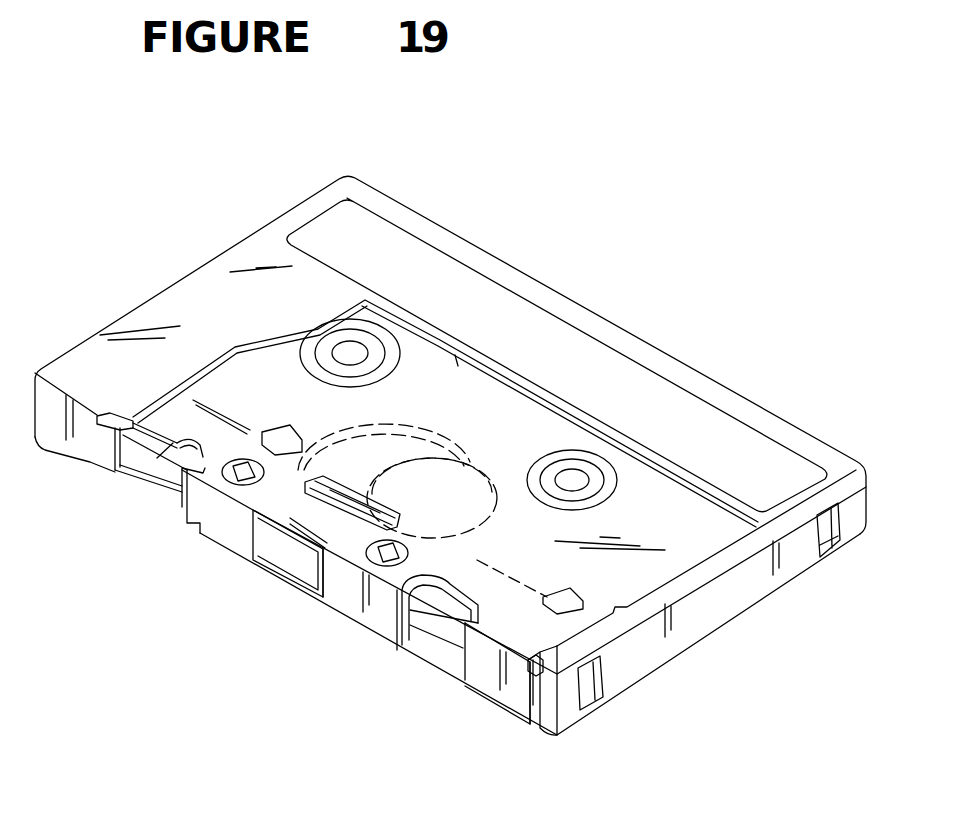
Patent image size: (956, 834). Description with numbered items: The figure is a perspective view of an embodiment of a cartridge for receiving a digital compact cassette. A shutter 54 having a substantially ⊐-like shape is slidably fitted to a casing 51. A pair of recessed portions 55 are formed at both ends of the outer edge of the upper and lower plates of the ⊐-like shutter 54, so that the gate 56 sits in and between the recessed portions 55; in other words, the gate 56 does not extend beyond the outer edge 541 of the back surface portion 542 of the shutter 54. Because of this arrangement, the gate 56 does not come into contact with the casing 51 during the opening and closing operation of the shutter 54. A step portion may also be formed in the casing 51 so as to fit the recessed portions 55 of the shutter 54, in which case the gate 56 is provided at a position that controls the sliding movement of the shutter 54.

The casing 51 is at (195, 291).
The shutter 54 is at (693, 523).
The outer edge 541 is at (300, 420).
The back surface portion 542 is at (220, 523).
The recessed portions 55 is at (530, 658).
The gate 56 is at (540, 692).